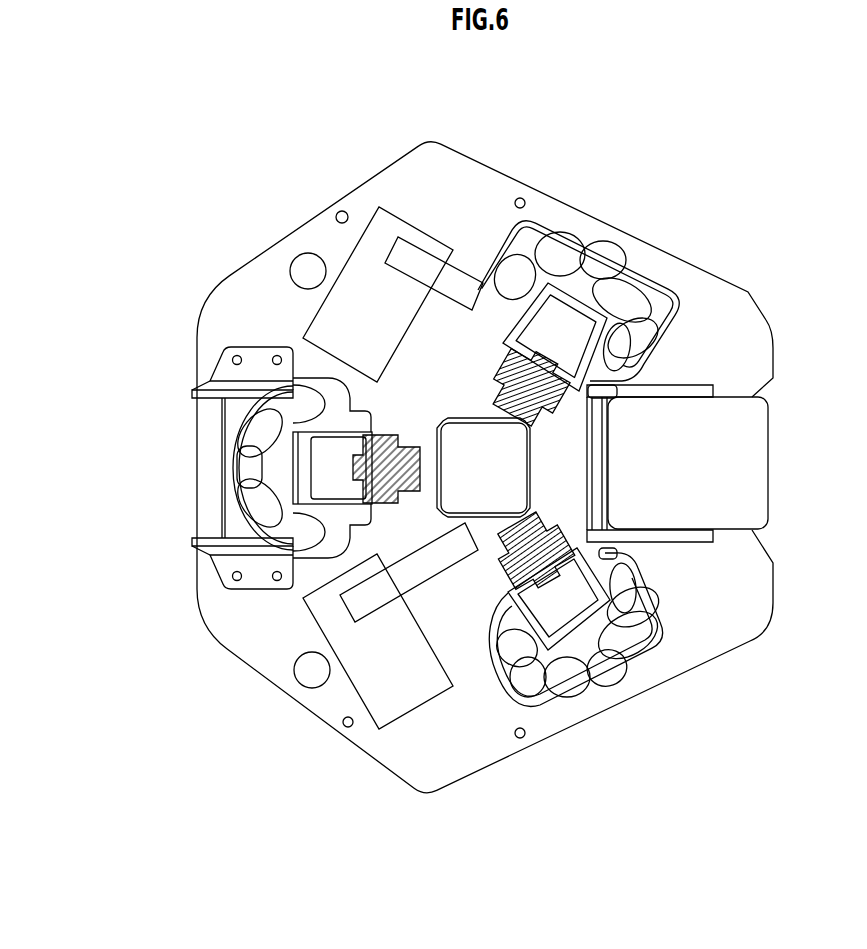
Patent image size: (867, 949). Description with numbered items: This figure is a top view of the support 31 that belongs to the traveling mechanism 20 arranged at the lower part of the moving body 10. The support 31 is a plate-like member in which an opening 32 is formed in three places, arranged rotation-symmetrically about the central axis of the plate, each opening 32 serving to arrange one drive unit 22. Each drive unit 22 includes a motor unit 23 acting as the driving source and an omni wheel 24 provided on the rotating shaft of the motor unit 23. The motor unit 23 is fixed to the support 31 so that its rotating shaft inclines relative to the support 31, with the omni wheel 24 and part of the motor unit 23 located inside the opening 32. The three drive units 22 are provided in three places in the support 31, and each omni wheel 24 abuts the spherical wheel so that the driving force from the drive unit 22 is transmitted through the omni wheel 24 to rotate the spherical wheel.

The moving body 10 is at (108, 222).
The traveling mechanism 20 is at (115, 325).
The drive unit 22 is at (401, 452).
The motor unit 23 is at (296, 460).
The omni wheel 24 is at (322, 463).
The support 31 is at (285, 677).
The opening 32 is at (235, 503).